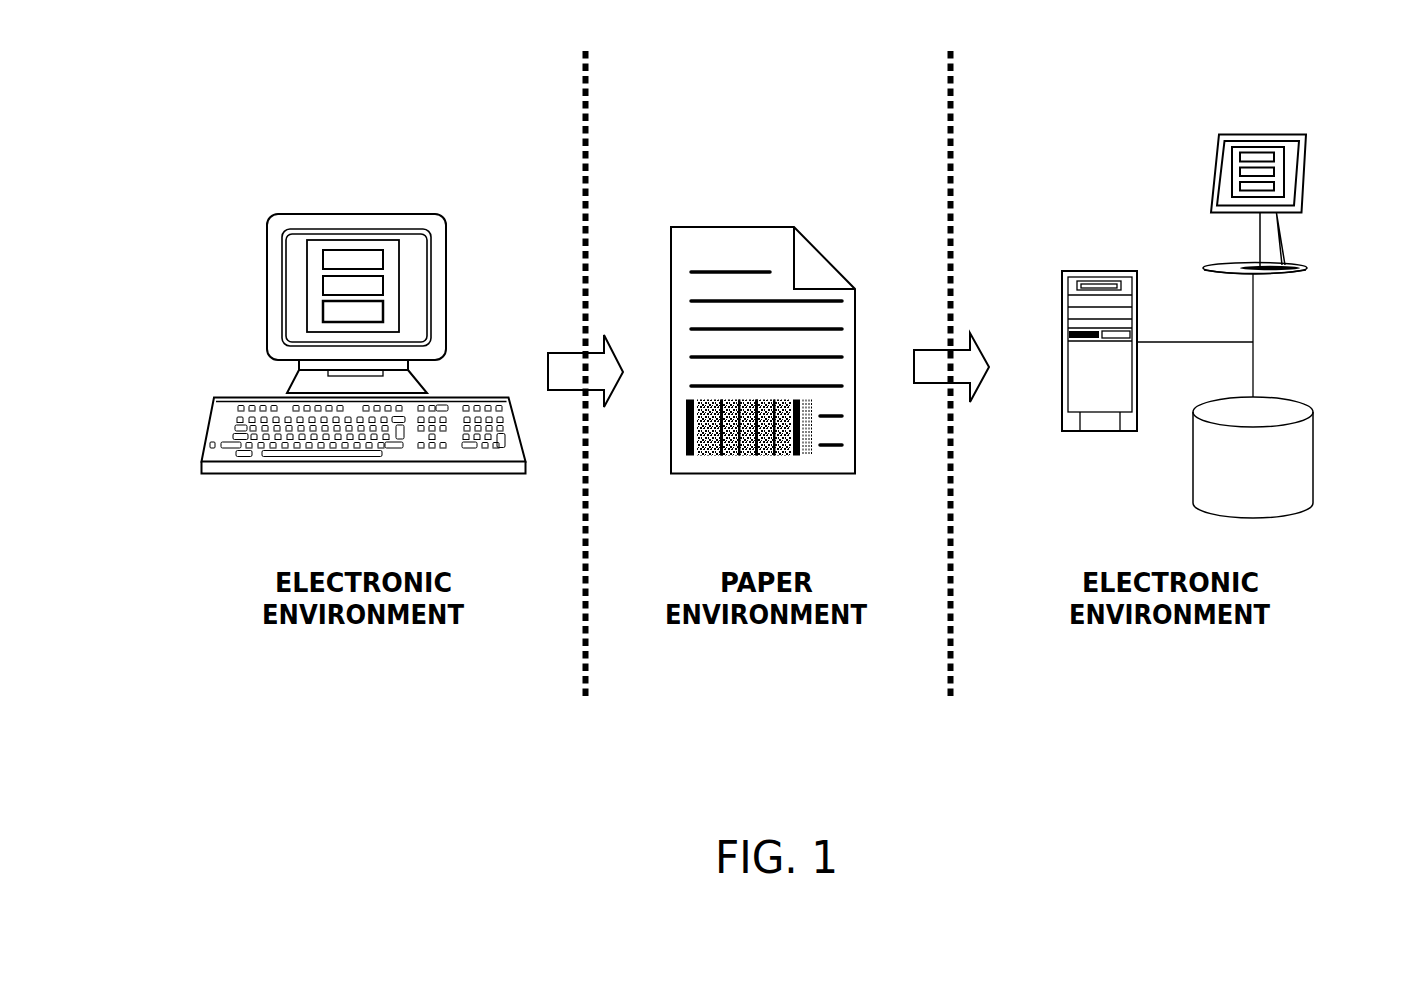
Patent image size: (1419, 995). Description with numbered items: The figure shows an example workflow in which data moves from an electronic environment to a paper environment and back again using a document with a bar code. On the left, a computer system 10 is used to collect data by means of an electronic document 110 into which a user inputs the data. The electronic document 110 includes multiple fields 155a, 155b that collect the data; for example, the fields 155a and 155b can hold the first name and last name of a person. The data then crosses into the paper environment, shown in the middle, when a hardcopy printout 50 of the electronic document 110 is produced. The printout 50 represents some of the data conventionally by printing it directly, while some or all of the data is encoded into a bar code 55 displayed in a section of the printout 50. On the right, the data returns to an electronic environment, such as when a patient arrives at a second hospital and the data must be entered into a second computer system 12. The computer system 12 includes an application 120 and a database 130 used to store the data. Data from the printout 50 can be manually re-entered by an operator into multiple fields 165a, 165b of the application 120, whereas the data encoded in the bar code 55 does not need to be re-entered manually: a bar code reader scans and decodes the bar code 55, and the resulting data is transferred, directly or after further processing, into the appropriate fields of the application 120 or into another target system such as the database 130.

The computer system 10 is at (203, 453).
The electronic document 110 is at (300, 259).
The field 155a is at (385, 257).
The field 155b is at (385, 286).
The printout 50 is at (671, 250).
The bar code 55 is at (686, 440).
The computer system 12 is at (1062, 328).
The application 120 is at (1223, 172).
The field 165a is at (1272, 157).
The field 165b is at (1272, 170).
The database 130 is at (1193, 482).